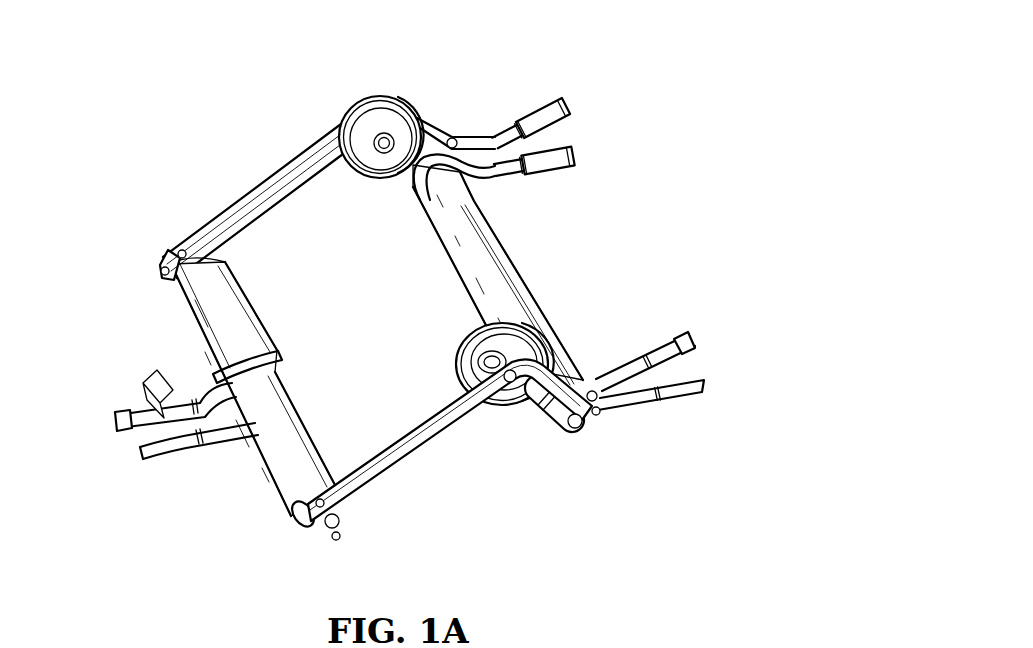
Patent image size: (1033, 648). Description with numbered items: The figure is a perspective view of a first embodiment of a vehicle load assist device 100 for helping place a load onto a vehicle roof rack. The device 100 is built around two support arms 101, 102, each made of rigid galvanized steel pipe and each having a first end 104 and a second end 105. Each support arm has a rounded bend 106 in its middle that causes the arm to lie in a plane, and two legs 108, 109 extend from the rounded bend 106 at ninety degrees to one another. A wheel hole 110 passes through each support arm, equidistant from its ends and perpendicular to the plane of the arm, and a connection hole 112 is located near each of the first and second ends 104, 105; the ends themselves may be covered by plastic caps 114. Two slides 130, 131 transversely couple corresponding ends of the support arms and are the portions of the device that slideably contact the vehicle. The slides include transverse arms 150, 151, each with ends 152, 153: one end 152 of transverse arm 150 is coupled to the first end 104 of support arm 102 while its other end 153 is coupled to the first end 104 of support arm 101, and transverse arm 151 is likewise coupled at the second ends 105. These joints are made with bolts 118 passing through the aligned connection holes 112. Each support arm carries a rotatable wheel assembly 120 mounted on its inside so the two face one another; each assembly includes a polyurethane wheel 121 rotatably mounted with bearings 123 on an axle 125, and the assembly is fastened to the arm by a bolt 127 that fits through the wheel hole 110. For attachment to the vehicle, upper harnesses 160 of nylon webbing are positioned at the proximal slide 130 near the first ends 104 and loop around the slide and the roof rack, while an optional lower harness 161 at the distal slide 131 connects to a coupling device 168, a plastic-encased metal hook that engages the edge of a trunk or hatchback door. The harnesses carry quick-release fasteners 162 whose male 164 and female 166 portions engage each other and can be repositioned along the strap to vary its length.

The vehicle load assist device 100 is at (409, 329).
The support arm 101 is at (262, 180).
The support arm 102 is at (425, 440).
The first end 104 is at (471, 134).
The second end 105 is at (117, 267).
The rounded bend 106 is at (349, 99).
The leg 108 is at (447, 116).
The leg 109 is at (211, 199).
The wheel hole 110 is at (205, 636).
The connection hole 112 is at (222, 244).
The plastic cap 114 is at (178, 246).
The bolt 118 is at (461, 125).
The rotatable wheel assembly 120 is at (405, 104).
The wheel 121 is at (342, 160).
The bearings 123 is at (358, 180).
The axle 125 is at (399, 131).
The bolt 127 is at (511, 383).
The slide 130 is at (575, 336).
The slide 131 is at (257, 491).
The transverse arm 150 is at (578, 427).
The transverse arm 151 is at (336, 545).
The end 152 is at (586, 453).
The end 153 is at (154, 236).
The upper harness 160 is at (540, 137).
The lower harness 161 is at (147, 434).
The quick-release fastener 162 is at (566, 180).
The male portion 164 is at (576, 163).
The female portion 166 is at (562, 101).
The coupling device 168 is at (160, 377).